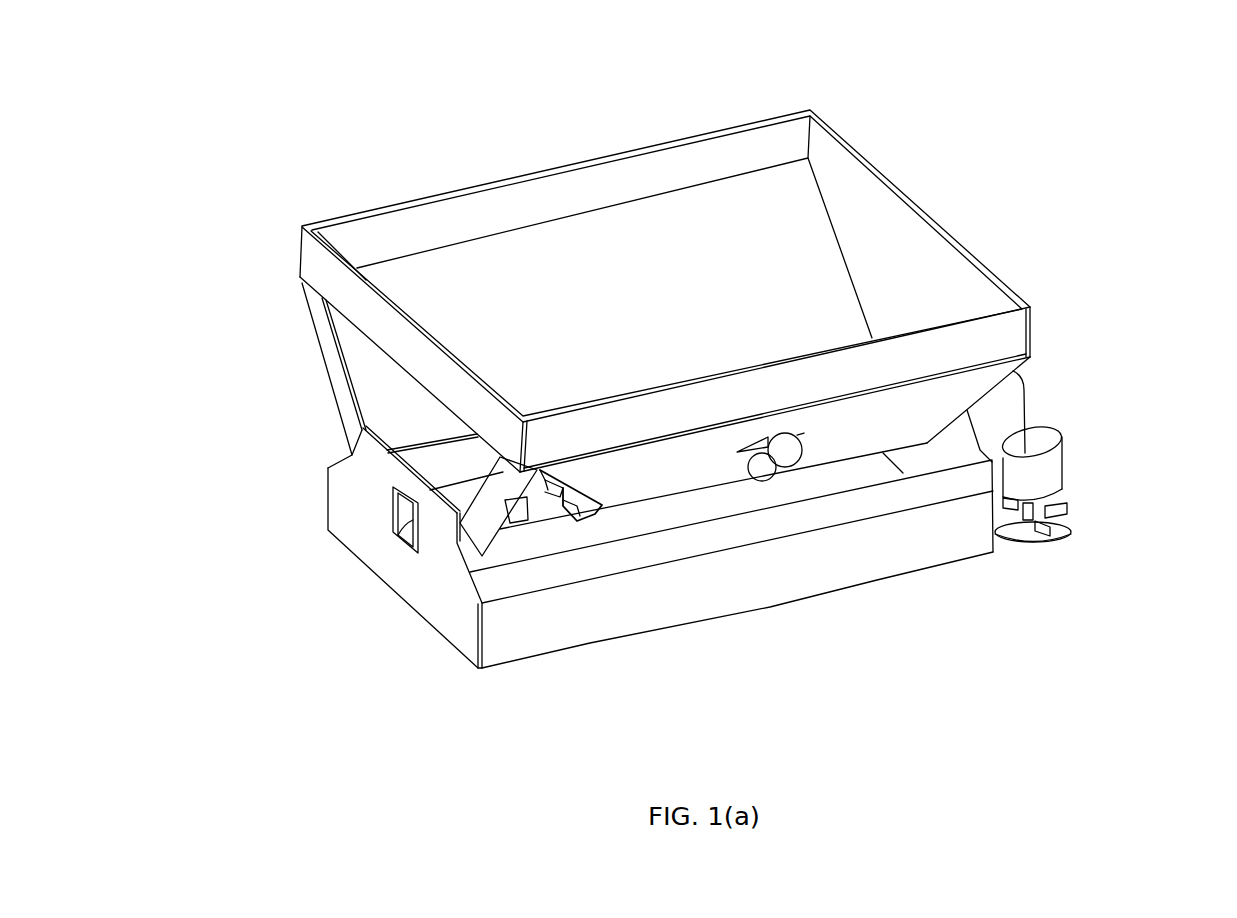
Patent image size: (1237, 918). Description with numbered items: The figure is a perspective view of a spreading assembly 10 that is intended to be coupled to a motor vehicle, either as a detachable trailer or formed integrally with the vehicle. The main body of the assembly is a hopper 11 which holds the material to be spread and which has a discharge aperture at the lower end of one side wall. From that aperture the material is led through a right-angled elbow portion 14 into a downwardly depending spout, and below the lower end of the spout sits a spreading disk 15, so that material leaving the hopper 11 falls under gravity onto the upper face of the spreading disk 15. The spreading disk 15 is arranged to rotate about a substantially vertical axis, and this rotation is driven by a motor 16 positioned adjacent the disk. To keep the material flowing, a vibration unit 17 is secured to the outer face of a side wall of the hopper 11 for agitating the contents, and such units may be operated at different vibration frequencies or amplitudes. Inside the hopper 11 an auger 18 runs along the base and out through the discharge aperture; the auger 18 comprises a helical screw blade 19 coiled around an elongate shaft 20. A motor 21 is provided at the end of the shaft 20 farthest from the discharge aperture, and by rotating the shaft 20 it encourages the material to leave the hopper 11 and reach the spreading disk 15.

The spreading assembly 10 is at (414, 116).
The hopper 11 is at (893, 212).
The right-angled elbow portion 14 is at (1005, 437).
The spreading disk 15 is at (1068, 523).
The motor 16 is at (1047, 472).
The vibration unit 17 is at (770, 470).
The auger 18 is at (588, 509).
The helical screw blade 19 is at (570, 500).
The elongate shaft 20 is at (533, 497).
The motor 21 is at (407, 513).